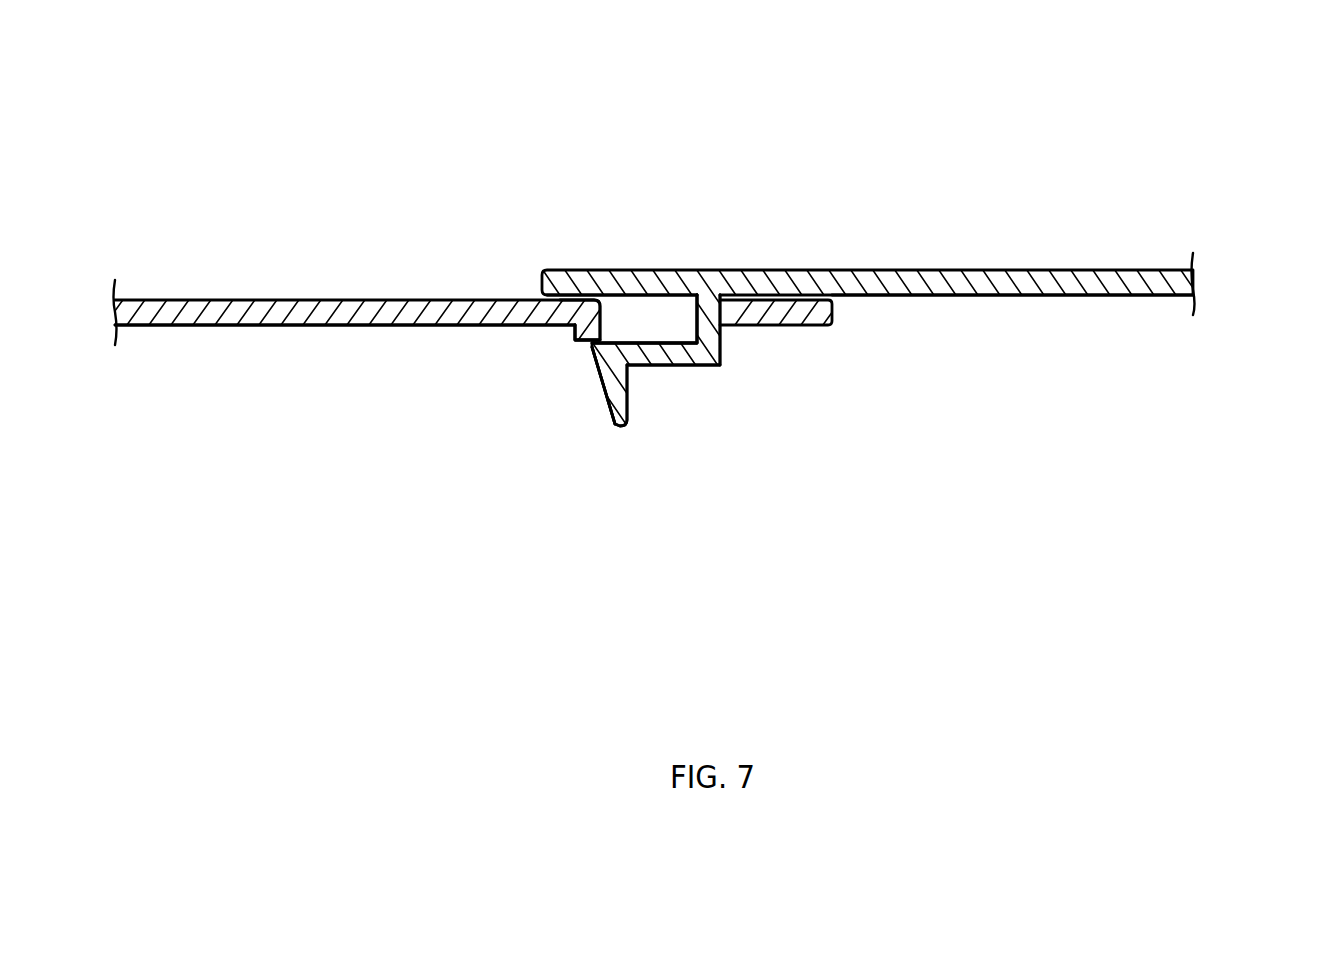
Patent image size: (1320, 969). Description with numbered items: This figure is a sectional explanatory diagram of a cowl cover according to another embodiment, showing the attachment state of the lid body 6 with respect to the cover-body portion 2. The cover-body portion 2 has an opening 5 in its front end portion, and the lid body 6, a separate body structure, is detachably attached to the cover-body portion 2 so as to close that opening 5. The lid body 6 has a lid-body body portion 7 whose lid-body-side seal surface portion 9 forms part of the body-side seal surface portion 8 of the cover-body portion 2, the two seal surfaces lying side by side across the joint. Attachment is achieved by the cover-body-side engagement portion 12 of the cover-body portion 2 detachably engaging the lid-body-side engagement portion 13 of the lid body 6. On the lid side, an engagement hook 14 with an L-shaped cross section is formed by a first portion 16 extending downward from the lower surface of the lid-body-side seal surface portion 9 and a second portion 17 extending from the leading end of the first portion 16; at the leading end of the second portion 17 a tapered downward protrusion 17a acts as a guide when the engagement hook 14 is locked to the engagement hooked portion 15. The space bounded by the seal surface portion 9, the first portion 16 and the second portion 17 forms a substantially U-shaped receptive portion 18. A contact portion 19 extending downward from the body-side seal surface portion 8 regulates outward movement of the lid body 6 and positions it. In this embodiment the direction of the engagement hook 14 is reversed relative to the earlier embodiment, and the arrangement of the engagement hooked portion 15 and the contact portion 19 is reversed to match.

The cover-body portion 2 is at (228, 261).
The opening 5 is at (922, 382).
The lid body 6 is at (1196, 175).
The lid-body body portion 7 is at (1029, 249).
The body-side seal surface portion 8 is at (195, 323).
The lid-body-side seal surface portion 9 is at (1080, 297).
The cover-body-side engagement portion 12 is at (517, 276).
The lid-body-side engagement portion 13 is at (705, 395).
The engagement hook 14 is at (587, 399).
The engagement hooked portion 15 is at (568, 296).
The first portion 16 is at (710, 328).
The second portion 17 is at (648, 355).
The downward protrusion 17a is at (605, 403).
The receptive portion 18 is at (668, 313).
The contact portion 19 is at (771, 298).